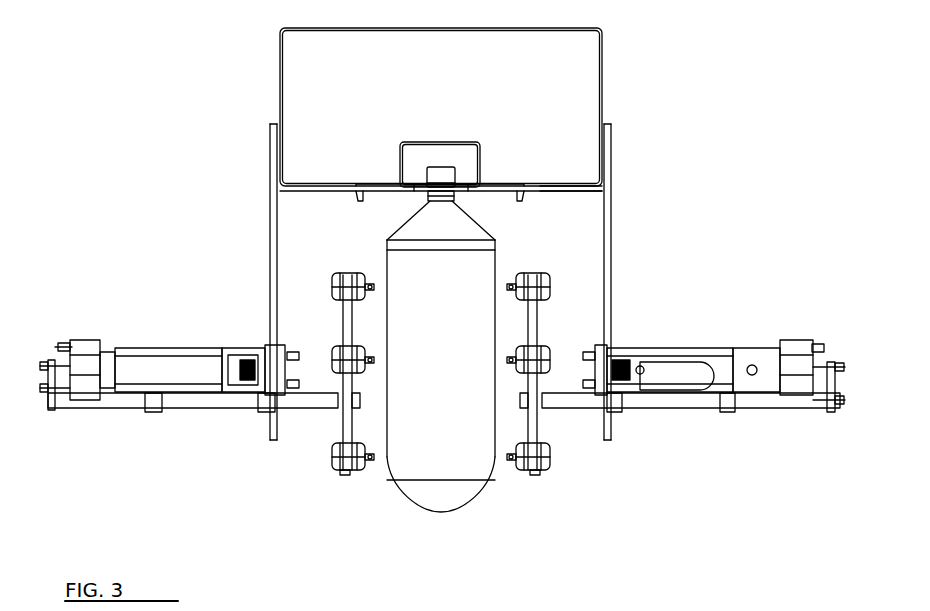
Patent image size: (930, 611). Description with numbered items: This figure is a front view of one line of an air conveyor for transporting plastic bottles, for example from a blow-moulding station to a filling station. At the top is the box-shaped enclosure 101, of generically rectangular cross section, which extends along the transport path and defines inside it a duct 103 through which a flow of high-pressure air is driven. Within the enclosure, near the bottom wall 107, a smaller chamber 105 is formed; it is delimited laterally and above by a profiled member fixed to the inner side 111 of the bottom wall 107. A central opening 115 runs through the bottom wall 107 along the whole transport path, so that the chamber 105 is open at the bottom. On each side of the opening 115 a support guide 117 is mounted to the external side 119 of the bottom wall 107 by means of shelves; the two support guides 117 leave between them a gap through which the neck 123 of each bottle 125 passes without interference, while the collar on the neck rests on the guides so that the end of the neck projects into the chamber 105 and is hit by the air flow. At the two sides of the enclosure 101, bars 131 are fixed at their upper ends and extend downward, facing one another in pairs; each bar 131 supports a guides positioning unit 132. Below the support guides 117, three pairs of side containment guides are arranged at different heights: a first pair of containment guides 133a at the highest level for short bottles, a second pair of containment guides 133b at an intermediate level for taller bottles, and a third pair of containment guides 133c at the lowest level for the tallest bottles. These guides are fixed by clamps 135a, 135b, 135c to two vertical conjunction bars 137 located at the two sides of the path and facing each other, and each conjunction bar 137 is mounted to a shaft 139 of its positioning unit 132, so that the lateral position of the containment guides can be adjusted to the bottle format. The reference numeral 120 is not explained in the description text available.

The box-shaped enclosure 101 is at (602, 70).
The duct 103 is at (462, 73).
The chamber 105 is at (400, 153).
The bottom wall 107 is at (571, 192).
The inner side 111 is at (557, 186).
The opening 115 is at (418, 167).
The support guide 117 is at (418, 193).
The external side 119 is at (318, 192).
The bottle neck 120 is at (497, 192).
The neck 123 is at (456, 165).
The bottle 125 is at (501, 498).
The bar 131 is at (270, 235).
The guides positioning unit 132 is at (136, 331).
The first pair of containment guides 133a is at (510, 288).
The second pair of containment guides 133b is at (510, 362).
The third pair of containment guides 133c is at (495, 457).
The clamp 135a is at (348, 276).
The clamp 135b is at (334, 356).
The clamp 135c is at (345, 470).
The vertical conjunction bar 137 is at (343, 430).
The shaft 139 is at (207, 405).